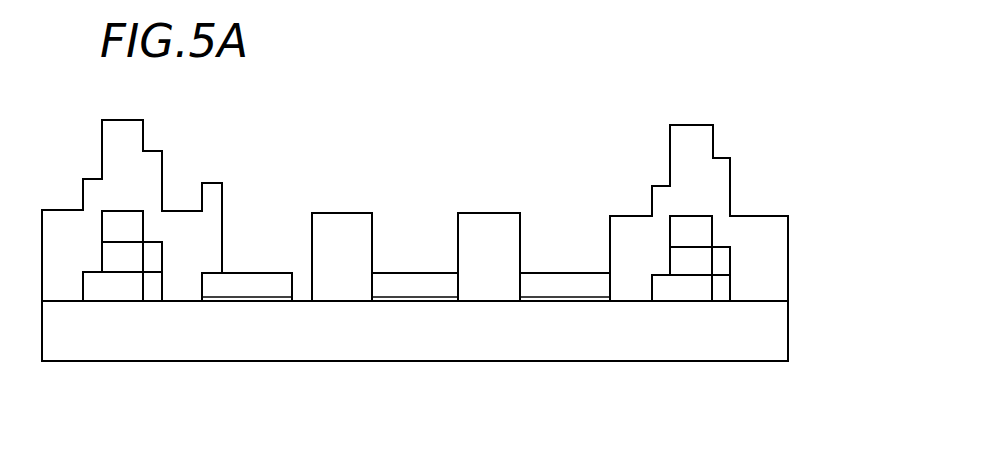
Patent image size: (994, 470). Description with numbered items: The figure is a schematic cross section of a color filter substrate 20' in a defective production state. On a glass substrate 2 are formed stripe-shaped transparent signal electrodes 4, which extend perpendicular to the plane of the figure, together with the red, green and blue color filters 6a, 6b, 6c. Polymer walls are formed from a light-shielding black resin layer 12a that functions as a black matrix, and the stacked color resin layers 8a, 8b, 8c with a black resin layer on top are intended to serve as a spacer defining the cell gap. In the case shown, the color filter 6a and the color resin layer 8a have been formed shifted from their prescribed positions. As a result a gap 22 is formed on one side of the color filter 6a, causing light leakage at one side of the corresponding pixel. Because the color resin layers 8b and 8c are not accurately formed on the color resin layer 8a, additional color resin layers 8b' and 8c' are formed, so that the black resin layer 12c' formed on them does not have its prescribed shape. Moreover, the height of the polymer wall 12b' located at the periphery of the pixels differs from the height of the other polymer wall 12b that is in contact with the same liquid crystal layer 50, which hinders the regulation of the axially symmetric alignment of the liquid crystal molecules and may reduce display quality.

The glass substrate 2 is at (775, 336).
The transparent signal electrodes 4 is at (212, 300).
The red color filter 6a is at (232, 290).
The green color filter 6b is at (398, 287).
The blue color filter 6c is at (543, 290).
The color resin layer 8a is at (662, 295).
The color resin layer 8b is at (690, 332).
The color resin layer 8b' is at (727, 352).
The color resin layer 8c is at (663, 168).
The color resin layer 8c' is at (750, 332).
The black resin layer 12a is at (492, 292).
The polymer wall 12b is at (700, 206).
The polymer wall 12b' is at (160, 201).
The black resin layer 12c' is at (782, 181).
The color filter substrate 20' is at (868, 249).
The gap 22 is at (303, 294).
The liquid crystal layer 50 is at (437, 178).